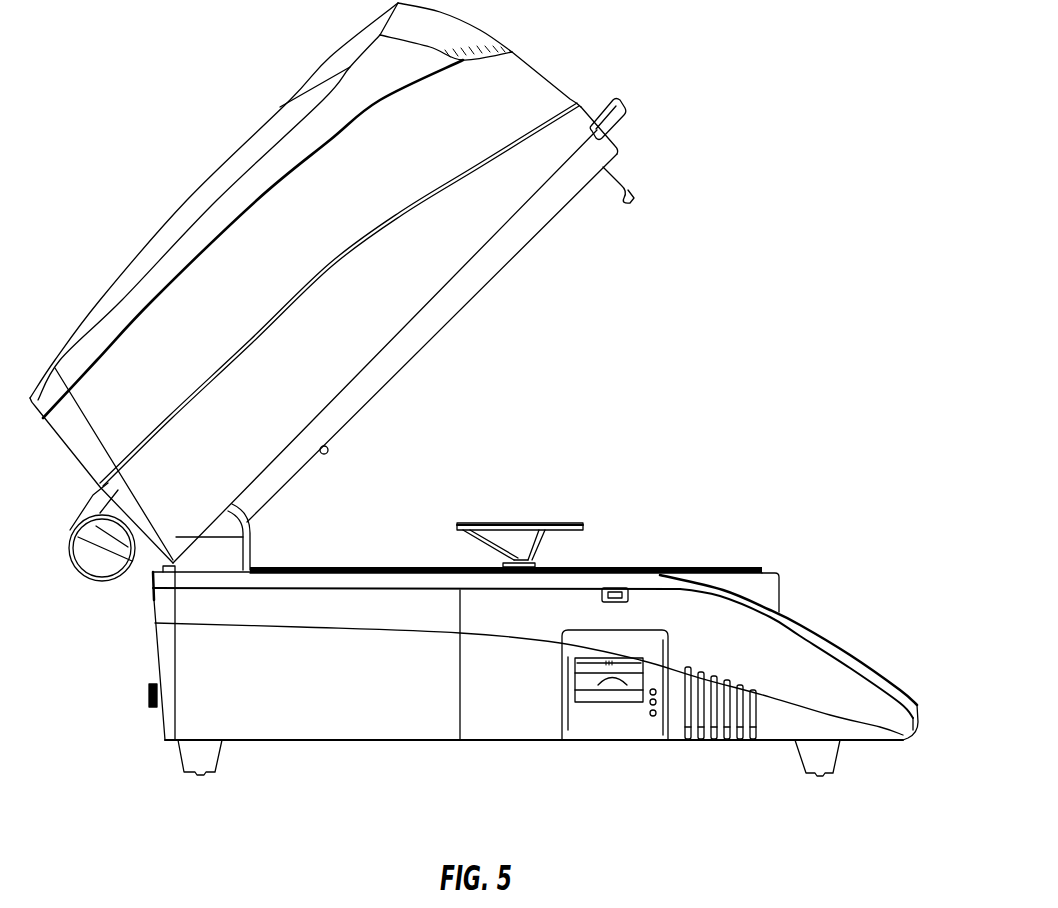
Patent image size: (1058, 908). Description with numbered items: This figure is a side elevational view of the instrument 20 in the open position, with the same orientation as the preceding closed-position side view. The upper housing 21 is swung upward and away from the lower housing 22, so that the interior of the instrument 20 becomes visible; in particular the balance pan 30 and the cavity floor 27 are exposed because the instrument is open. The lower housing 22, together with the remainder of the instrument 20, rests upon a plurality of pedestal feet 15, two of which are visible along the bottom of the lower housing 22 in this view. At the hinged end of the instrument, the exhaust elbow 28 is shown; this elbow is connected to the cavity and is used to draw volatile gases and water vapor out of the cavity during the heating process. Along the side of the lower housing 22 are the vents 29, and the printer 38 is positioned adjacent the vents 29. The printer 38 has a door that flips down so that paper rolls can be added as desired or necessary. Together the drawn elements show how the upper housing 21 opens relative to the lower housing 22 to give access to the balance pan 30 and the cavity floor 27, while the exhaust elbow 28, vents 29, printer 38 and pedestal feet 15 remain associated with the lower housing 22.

The instrument 20 is at (224, 124).
The upper housing 21 is at (320, 237).
The lower housing 22 is at (407, 706).
The cavity floor 27 is at (683, 570).
The exhaust elbow 28 is at (91, 583).
The vents 29 is at (715, 733).
The balance pan 30 is at (567, 523).
The printer 38 is at (623, 718).
The pedestal feet 15 is at (212, 757).